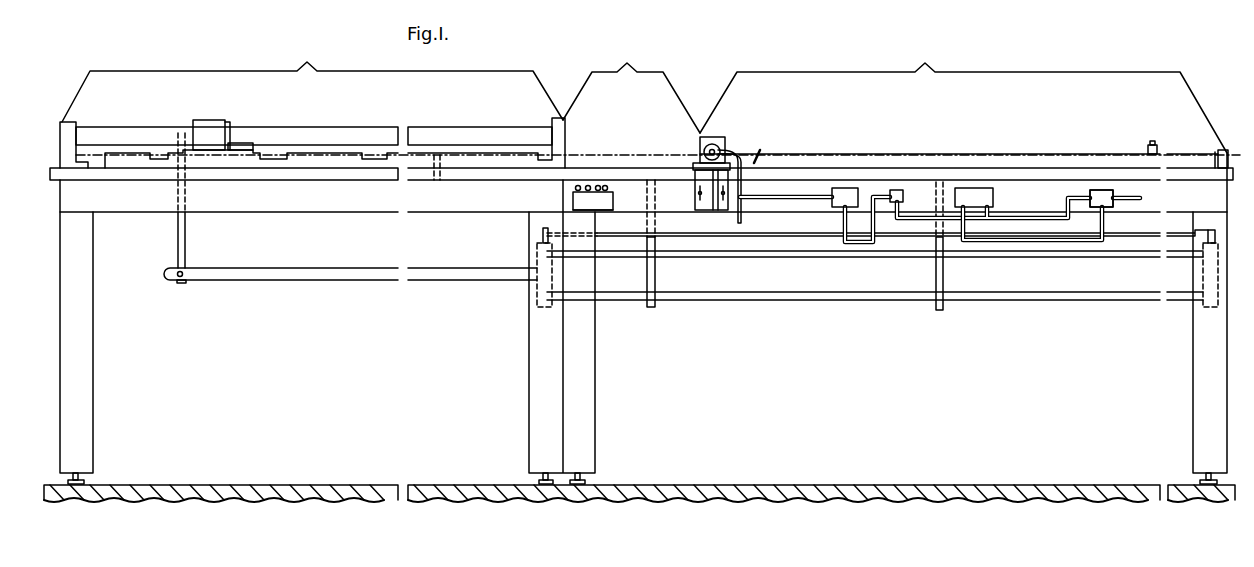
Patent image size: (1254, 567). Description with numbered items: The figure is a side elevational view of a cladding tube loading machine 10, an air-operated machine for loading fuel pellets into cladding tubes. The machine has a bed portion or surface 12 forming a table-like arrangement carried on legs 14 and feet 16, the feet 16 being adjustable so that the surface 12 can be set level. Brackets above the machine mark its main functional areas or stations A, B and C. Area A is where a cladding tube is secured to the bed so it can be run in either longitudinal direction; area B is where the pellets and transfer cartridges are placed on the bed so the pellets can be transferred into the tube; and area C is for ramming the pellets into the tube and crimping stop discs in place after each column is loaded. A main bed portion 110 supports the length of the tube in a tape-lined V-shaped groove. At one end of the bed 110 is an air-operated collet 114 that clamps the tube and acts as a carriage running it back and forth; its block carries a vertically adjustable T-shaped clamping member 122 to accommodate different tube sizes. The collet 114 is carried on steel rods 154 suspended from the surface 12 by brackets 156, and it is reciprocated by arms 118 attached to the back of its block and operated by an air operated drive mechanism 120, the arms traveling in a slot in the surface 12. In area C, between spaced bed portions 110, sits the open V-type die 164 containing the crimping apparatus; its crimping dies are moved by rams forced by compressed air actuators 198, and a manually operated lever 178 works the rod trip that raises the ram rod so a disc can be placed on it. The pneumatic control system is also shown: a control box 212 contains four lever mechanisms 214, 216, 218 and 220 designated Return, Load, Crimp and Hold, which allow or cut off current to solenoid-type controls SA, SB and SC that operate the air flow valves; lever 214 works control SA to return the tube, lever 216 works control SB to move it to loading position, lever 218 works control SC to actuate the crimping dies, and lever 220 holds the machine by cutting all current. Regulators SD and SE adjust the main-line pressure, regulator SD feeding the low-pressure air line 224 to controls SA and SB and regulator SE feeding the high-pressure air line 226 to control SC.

The cladding tube loading machine 10 is at (681, 204).
The bed portion or surface 12 is at (148, 207).
The legs 14 is at (73, 425).
The feet 16 is at (83, 482).
The main bed portion 110 is at (480, 183).
The collet 114 is at (208, 127).
The arms 118 is at (185, 248).
The air operated drive mechanism 120 is at (360, 275).
The T-shaped clamping member 122 is at (243, 147).
The steel rods 154 is at (371, 137).
The brackets 156 is at (72, 125).
The open V-type die 164 is at (700, 140).
The lever 178 is at (761, 150).
The compressed air actuators 198 is at (717, 150).
The control box 212 is at (603, 210).
The lever mechanism 214 is at (573, 191).
The lever mechanism 216 is at (589, 186).
The lever mechanism 218 is at (599, 186).
The lever mechanism 220 is at (612, 192).
The air line 224 is at (812, 199).
The air line 226 is at (1163, 227).
The control SA is at (897, 190).
The control SB is at (978, 188).
The control SC is at (847, 187).
The regulator SD is at (1098, 190).
The regulator SE is at (1098, 190).
The area or station A is at (312, 81).
The area or station B is at (631, 86).
The area or station C is at (963, 96).